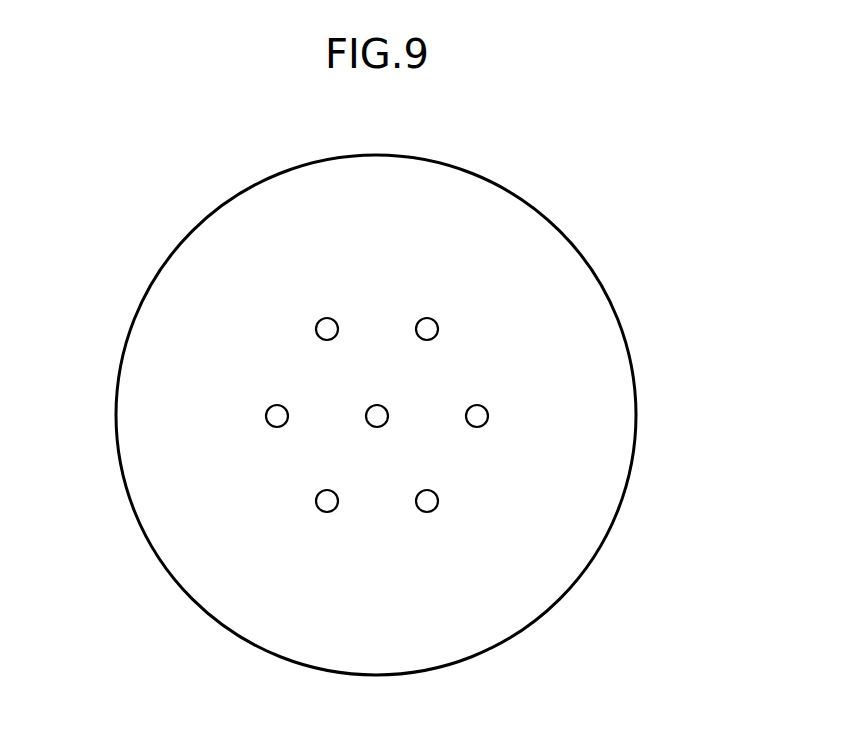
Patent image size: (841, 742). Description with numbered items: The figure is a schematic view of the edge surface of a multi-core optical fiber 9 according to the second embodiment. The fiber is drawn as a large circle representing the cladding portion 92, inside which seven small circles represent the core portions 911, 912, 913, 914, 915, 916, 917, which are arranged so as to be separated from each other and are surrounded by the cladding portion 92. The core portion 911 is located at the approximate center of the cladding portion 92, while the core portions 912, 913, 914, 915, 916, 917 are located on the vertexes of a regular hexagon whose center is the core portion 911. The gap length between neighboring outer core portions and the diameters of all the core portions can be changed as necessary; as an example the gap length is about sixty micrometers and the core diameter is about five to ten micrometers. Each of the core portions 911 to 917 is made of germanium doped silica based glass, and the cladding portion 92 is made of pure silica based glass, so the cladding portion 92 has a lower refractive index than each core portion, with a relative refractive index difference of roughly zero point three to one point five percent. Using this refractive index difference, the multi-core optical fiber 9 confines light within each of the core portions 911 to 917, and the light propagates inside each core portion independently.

The multi-core optical fiber 9 is at (518, 163).
The cladding portion 92 is at (598, 473).
The core portion 911 is at (374, 401).
The core portion 912 is at (437, 326).
The core portion 913 is at (488, 413).
The core portion 914 is at (437, 500).
The core portion 915 is at (313, 500).
The core portion 916 is at (262, 413).
The core portion 917 is at (313, 326).